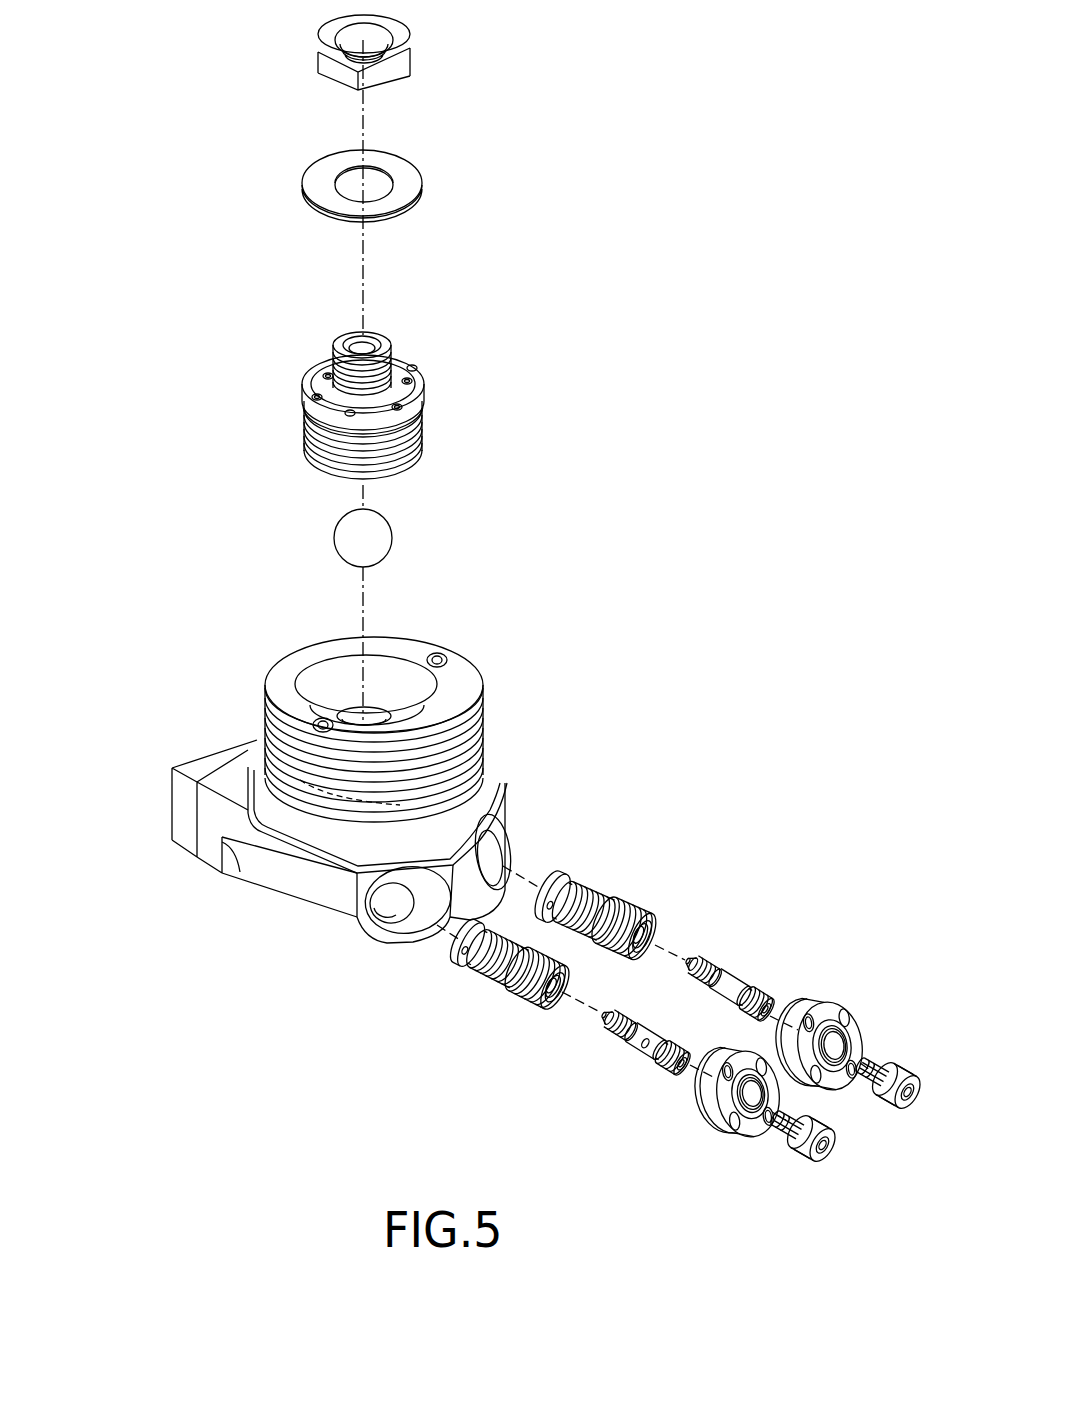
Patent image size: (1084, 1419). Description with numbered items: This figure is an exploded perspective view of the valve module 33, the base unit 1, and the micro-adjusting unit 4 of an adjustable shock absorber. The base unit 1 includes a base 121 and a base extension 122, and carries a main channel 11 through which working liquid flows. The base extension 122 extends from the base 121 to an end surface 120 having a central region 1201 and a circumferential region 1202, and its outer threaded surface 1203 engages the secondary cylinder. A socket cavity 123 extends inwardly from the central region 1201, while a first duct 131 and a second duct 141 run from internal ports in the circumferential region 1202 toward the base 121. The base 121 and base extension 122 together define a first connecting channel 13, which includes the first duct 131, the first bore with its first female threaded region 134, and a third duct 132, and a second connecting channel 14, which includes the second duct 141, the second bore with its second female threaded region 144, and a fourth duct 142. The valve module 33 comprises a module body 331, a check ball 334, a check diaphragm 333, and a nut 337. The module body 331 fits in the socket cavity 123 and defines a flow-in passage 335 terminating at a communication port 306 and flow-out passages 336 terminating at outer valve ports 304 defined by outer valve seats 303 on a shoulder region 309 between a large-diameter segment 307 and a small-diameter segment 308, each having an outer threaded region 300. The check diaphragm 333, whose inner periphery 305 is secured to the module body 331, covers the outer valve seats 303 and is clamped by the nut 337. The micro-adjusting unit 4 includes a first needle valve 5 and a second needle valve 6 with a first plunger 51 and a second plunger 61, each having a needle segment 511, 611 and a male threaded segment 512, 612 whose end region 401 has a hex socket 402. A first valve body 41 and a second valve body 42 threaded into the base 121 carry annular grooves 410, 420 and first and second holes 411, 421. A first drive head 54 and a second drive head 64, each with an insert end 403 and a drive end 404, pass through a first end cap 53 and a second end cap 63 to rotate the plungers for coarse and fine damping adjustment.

The base unit 1 is at (190, 878).
The main channel 11 is at (260, 769).
The base 121 is at (282, 856).
The base extension 122 is at (308, 618).
The socket cavity 123 is at (305, 664).
The first connecting channel 13 is at (428, 642).
The first duct 131 is at (458, 658).
The second connecting channel 14 is at (302, 706).
The second duct 141 is at (268, 734).
The fourth duct 142 is at (270, 808).
The end surface 120 is at (490, 695).
The central region 1201 is at (448, 688).
The circumferential region 1202 is at (475, 680).
The outer threaded surface 1203 is at (470, 762).
The third duct 132 is at (485, 706).
The first female threaded region 134 is at (642, 936).
The second female threaded region 144 is at (554, 986).
The valve module 33 is at (262, 274).
The module body 331 is at (344, 360).
The check diaphragm 333 is at (427, 164).
The check ball 334 is at (380, 530).
The flow-in passage 335 is at (356, 340).
The flow-out passage 336 is at (424, 390).
The nut 337 is at (399, 33).
The outer threaded region 300 is at (320, 362).
The outer valve seat 303 is at (312, 370).
The outer valve port 304 is at (408, 380).
The inner periphery 305 is at (378, 172).
The communication port 306 is at (383, 336).
The large-diameter segment 307 is at (440, 448).
The small-diameter segment 308 is at (377, 322).
The shoulder region 309 is at (413, 402).
The micro-adjusting unit 4 is at (718, 915).
The first valve body 41 is at (601, 863).
The annular groove 410 is at (556, 920).
The first holes 411 is at (550, 905).
The second valve body 42 is at (452, 988).
The annular groove 420 is at (474, 954).
The second holes 421 is at (465, 950).
The end region 401 is at (770, 1012).
The hex socket 402 is at (778, 1026).
The insert end 403 is at (863, 1082).
The drive end 404 is at (883, 1106).
The first needle valve 5 is at (848, 972).
The first plunger 51 is at (727, 933).
The first needle segment 511 is at (691, 962).
The first male threaded segment 512 is at (745, 996).
The first end cap 53 is at (853, 1022).
The first drive head 54 is at (896, 1127).
The second needle valve 6 is at (696, 1145).
The second plunger 61 is at (596, 1096).
The second needle segment 611 is at (607, 1016).
The second male threaded segment 612 is at (640, 1042).
The second end cap 63 is at (733, 1130).
The second drive head 64 is at (800, 1172).